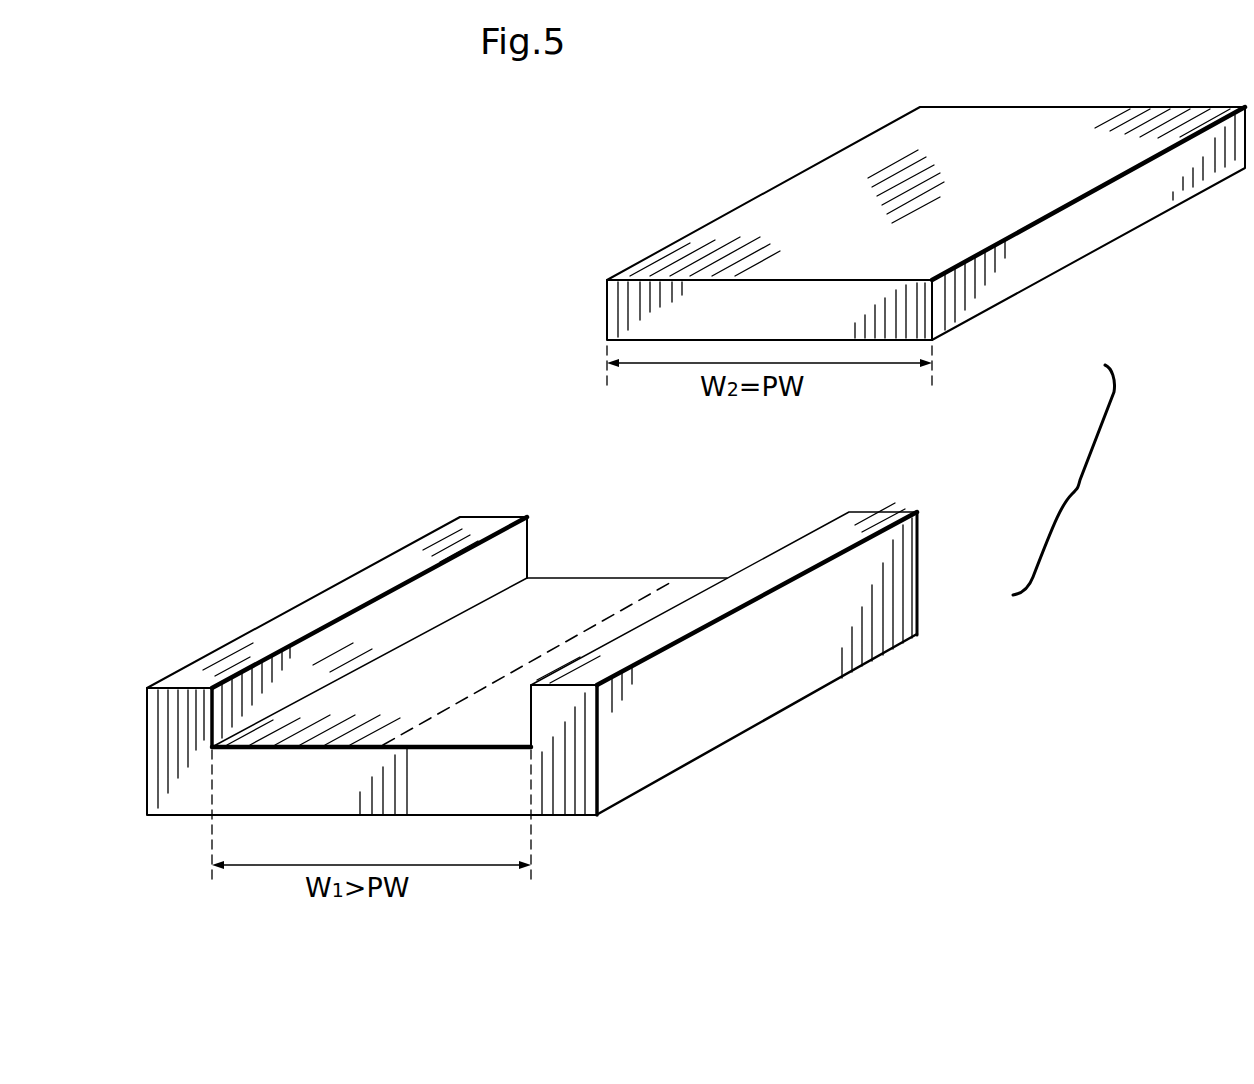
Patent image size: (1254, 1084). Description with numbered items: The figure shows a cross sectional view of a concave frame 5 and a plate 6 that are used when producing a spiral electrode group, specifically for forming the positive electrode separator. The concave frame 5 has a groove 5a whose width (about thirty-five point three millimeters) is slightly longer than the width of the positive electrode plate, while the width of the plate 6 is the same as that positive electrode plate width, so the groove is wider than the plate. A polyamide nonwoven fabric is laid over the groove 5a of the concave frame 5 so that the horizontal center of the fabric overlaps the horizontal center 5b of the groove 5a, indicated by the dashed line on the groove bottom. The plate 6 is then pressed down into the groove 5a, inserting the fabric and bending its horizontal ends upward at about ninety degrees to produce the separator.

The concave frame 5 is at (532, 635).
The groove 5a is at (436, 640).
The horizontal center 5b is at (595, 612).
The plate 6 is at (1075, 235).